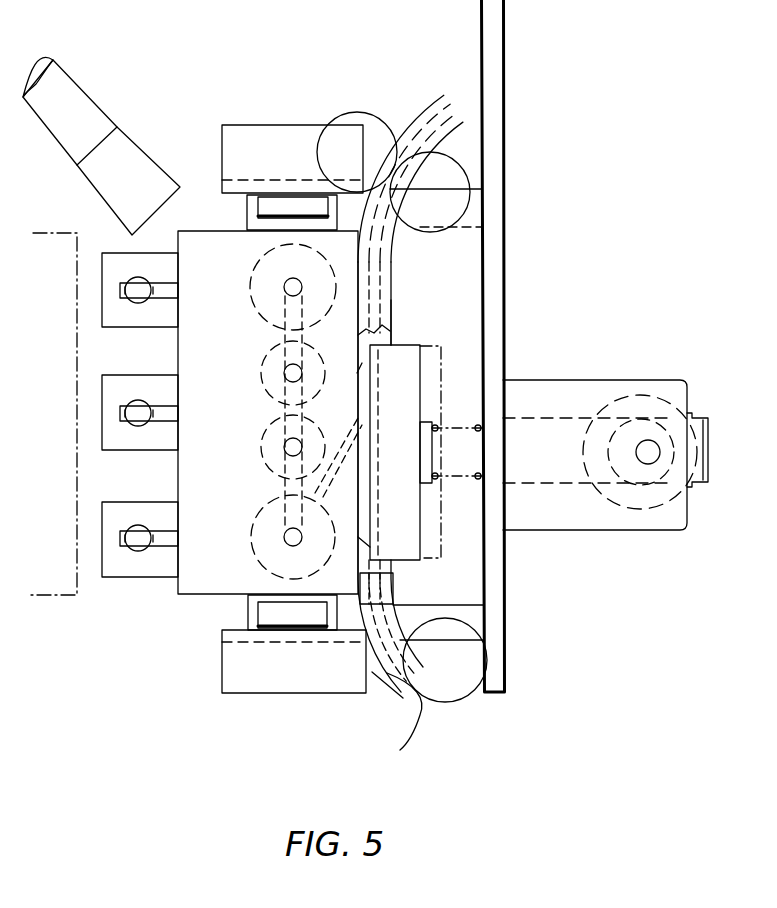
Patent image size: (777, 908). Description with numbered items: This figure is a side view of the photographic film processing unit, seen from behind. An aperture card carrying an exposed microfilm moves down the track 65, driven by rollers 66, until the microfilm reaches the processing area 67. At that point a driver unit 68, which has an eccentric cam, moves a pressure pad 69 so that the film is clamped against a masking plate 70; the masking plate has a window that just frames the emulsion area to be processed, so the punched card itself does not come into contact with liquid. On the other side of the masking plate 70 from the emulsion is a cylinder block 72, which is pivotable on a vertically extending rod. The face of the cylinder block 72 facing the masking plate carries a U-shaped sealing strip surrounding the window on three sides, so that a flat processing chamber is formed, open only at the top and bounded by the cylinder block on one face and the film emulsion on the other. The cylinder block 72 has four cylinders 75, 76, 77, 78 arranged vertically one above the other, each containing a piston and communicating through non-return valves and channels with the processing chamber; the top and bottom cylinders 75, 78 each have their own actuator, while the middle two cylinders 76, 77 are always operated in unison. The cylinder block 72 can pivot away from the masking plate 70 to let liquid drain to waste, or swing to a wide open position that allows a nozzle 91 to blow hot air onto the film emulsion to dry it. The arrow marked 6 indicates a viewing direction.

The view direction arrow 6 is at (62, 413).
The track 65 is at (418, 120).
The rollers 66 is at (453, 168).
The processing area 67 is at (407, 307).
The driver unit 68 is at (663, 380).
The pressure pad 69 is at (395, 352).
The masking plate 70 is at (393, 587).
The cylinder block 72 is at (200, 597).
The cylinder 75 is at (256, 309).
The cylinder 76 is at (268, 392).
The cylinder 77 is at (262, 461).
The cylinder 78 is at (258, 528).
The nozzle 91 is at (138, 157).